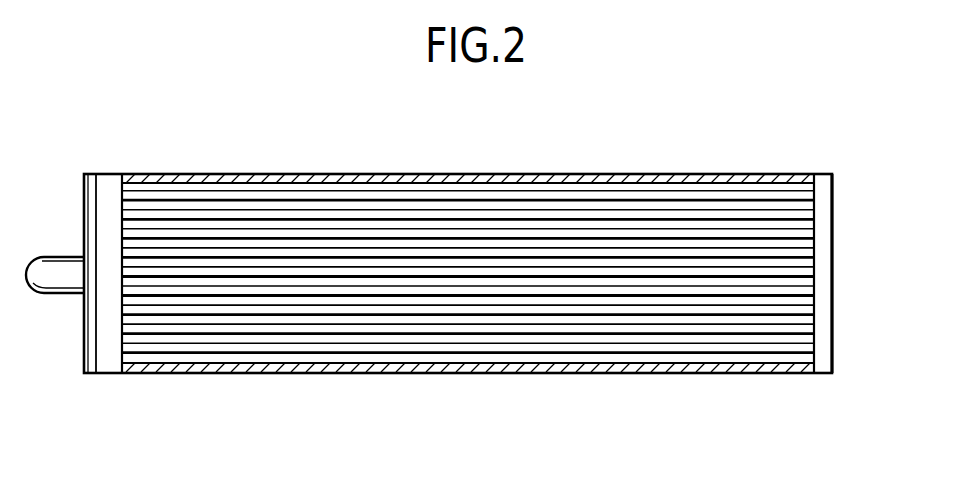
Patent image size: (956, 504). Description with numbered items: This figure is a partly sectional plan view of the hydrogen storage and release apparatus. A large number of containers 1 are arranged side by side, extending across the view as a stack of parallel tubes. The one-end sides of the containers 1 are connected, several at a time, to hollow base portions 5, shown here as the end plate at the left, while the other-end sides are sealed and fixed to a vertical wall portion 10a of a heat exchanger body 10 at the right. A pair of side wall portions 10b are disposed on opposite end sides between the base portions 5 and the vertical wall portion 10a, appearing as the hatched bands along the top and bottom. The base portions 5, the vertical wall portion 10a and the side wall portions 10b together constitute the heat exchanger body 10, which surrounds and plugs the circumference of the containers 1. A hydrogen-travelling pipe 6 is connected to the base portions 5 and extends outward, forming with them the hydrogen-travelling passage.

The container 1 is at (637, 193).
The hollow base portion 5 is at (107, 174).
The hydrogen-travelling pipe 6 is at (45, 256).
The heat exchanger body 10 is at (494, 288).
The vertical wall portion 10a is at (835, 197).
The side wall portion 10b is at (308, 174).